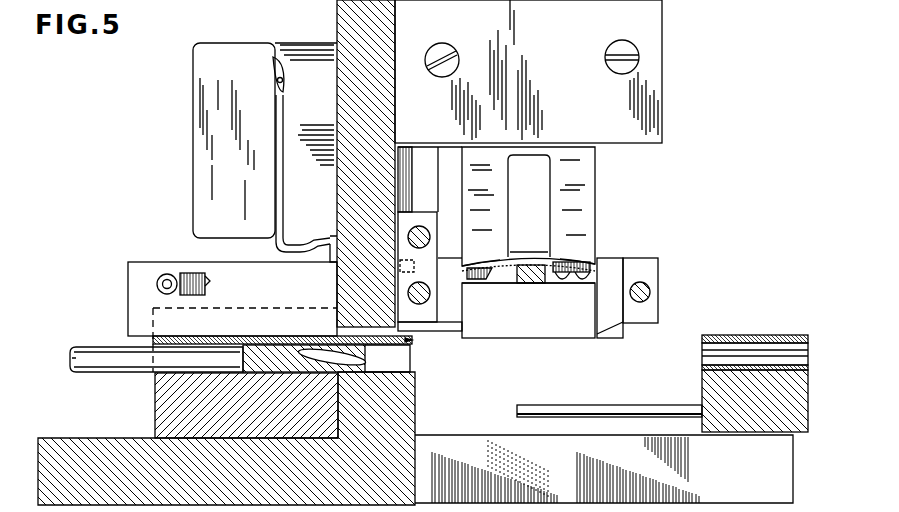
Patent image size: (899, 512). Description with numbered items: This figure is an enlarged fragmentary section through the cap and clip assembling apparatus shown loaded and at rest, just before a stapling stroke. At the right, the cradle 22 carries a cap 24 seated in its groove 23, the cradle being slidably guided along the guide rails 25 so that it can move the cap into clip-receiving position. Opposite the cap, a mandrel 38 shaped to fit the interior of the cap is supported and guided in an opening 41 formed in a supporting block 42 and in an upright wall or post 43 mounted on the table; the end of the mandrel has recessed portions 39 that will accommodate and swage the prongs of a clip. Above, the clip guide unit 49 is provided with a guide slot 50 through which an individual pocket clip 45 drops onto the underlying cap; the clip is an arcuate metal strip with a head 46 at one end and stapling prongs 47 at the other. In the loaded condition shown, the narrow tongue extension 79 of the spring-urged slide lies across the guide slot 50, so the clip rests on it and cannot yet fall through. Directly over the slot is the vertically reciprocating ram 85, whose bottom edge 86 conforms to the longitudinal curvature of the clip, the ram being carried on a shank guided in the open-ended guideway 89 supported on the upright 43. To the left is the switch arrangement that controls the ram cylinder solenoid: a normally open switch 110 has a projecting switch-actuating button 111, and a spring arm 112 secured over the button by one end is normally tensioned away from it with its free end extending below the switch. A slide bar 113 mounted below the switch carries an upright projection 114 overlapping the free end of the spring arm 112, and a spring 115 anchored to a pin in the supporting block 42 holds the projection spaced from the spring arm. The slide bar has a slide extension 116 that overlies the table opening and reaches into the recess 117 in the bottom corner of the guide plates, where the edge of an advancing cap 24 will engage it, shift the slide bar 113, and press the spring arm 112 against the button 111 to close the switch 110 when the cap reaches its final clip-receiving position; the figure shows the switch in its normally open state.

The cradle 22 is at (702, 380).
The groove 23 is at (702, 357).
The cap 24 is at (756, 335).
The guide rails 25 is at (565, 405).
The mandrel terminal 38 is at (133, 372).
The recessed portions 39 is at (345, 352).
The opening 41 is at (158, 340).
The supporting block 42 is at (153, 405).
The upright wall or post 43 is at (337, 10).
The pocket clip 45 is at (527, 258).
The head 46 is at (470, 279).
The stapling prongs 47 is at (565, 279).
The clip guide unit 49 is at (643, 258).
The guide slot 50 is at (590, 316).
The tongue extension 79 is at (530, 283).
The ram 85 is at (596, 176).
The bottom edge 86 is at (490, 258).
The guideway 89 is at (661, 42).
The switch 110 is at (193, 85).
The switch-actuating button 111 is at (278, 182).
The spring arm 112 is at (286, 200).
The slide bar 113 is at (143, 268).
The upright projection 114 is at (333, 236).
The spring 115 is at (186, 272).
The slide extension 116 is at (416, 342).
The recess 117 is at (440, 320).